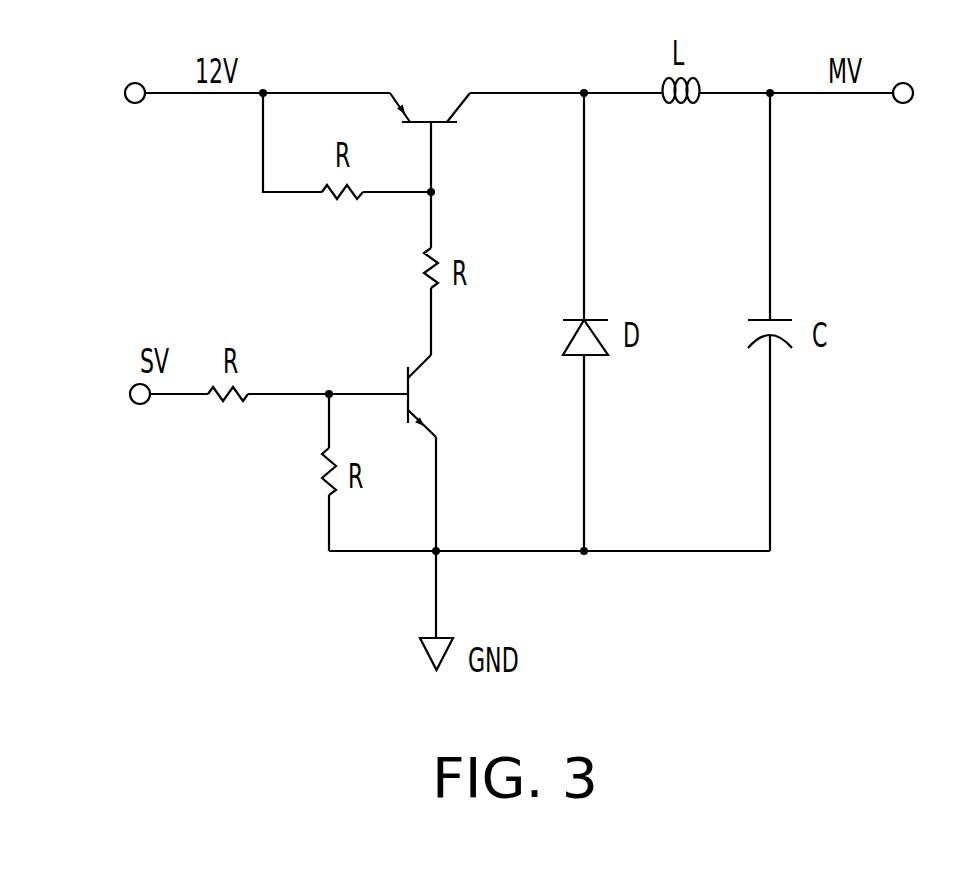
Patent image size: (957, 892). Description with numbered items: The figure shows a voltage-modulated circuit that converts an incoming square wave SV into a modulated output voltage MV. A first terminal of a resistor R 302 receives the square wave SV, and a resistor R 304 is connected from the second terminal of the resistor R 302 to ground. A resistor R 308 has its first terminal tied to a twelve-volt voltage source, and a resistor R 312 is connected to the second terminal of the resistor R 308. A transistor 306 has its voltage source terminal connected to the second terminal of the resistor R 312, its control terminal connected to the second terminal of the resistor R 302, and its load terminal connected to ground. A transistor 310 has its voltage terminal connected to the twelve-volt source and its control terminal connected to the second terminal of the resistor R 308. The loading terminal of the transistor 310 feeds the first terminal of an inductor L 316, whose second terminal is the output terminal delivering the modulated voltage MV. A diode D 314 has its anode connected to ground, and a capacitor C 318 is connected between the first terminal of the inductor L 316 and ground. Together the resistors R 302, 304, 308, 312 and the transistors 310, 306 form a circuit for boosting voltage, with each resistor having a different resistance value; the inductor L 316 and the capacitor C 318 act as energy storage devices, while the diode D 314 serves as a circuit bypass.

The resistor R 302 is at (226, 402).
The resistor R 304 is at (327, 478).
The transistor 306 is at (417, 402).
The resistor R 308 is at (343, 200).
The transistor 310 is at (442, 125).
The resistor R 312 is at (425, 277).
The diode D 314 is at (600, 318).
The inductor L 316 is at (679, 108).
The capacitor C 318 is at (786, 316).